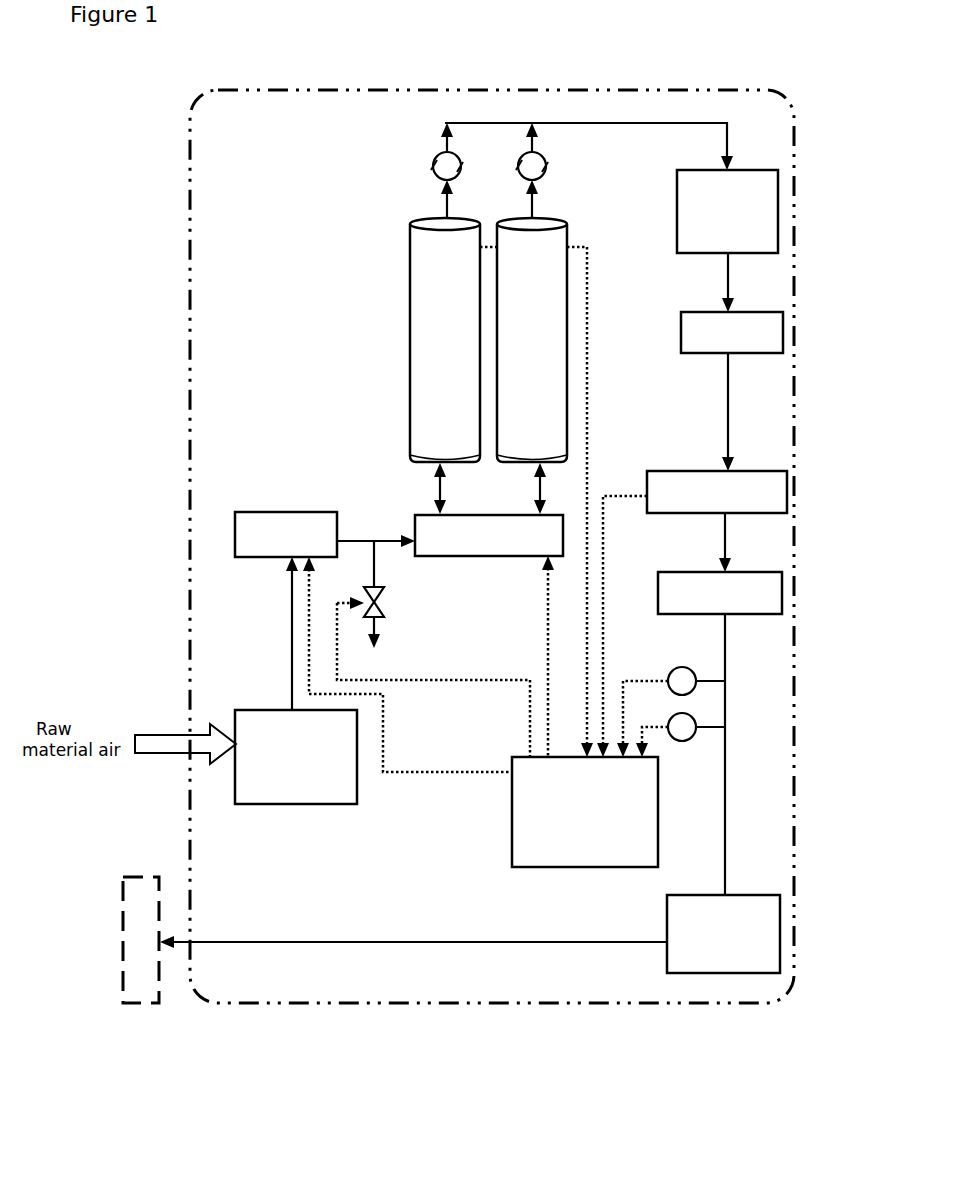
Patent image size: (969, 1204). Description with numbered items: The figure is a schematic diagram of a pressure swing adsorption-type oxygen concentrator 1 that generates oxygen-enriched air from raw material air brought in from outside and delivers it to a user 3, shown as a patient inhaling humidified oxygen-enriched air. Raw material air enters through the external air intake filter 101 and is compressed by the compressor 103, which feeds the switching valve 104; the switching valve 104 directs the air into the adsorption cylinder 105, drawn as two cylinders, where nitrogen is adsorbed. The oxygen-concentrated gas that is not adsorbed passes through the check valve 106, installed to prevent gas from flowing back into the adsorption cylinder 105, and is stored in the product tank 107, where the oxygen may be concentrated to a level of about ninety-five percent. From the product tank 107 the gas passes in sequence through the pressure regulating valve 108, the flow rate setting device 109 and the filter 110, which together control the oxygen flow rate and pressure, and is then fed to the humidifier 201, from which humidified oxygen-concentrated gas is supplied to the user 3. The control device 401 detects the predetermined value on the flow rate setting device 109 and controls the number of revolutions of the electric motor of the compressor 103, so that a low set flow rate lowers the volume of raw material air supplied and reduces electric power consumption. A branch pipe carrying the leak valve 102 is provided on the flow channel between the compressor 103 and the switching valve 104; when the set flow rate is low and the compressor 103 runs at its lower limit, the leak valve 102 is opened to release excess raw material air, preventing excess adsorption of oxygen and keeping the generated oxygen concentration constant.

The oxygen concentrator 1 is at (436, 78).
The user 3 is at (148, 984).
The external air intake filter 101 is at (268, 718).
The leak valve 102 is at (386, 596).
The compressor 103 is at (235, 538).
The switching valve 104 is at (415, 530).
The adsorption cylinder 105 is at (517, 265).
The check valve 106 is at (518, 166).
The product tank 107 is at (757, 188).
The pressure regulating valve 108 is at (773, 330).
The flow rate setting device 109 is at (766, 490).
The filter 110 is at (768, 583).
The humidifier 201 is at (762, 904).
The control device 401 is at (485, 557).